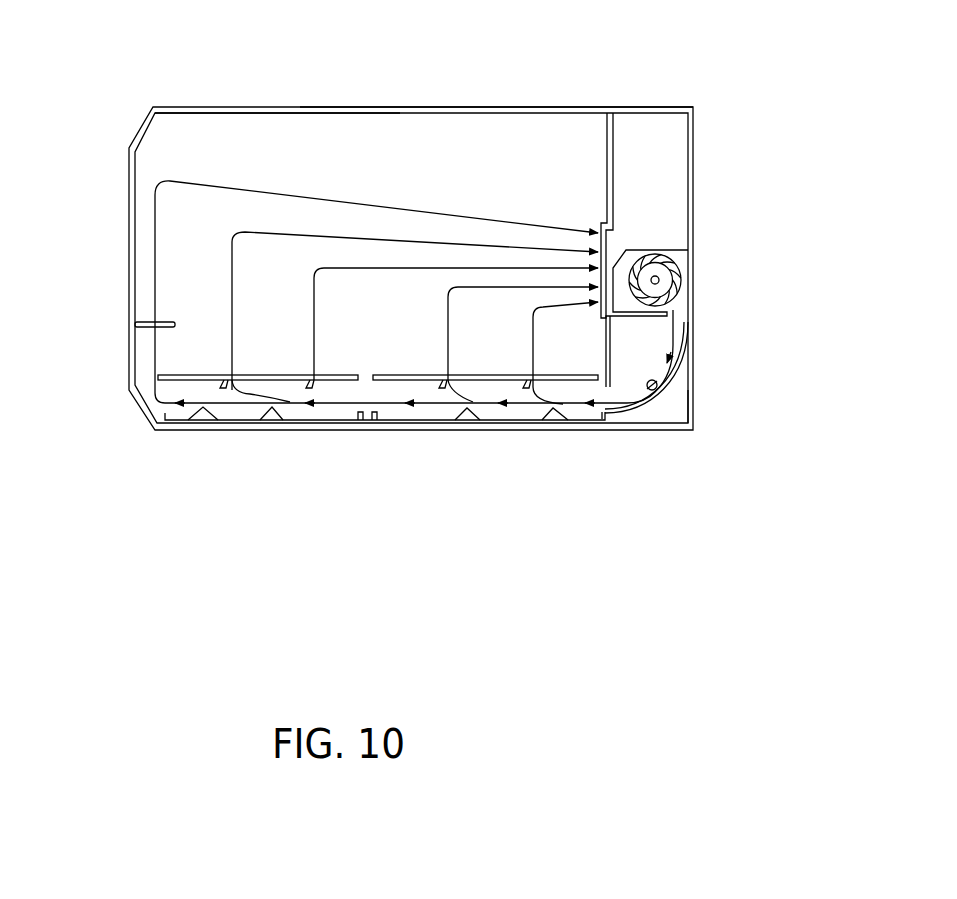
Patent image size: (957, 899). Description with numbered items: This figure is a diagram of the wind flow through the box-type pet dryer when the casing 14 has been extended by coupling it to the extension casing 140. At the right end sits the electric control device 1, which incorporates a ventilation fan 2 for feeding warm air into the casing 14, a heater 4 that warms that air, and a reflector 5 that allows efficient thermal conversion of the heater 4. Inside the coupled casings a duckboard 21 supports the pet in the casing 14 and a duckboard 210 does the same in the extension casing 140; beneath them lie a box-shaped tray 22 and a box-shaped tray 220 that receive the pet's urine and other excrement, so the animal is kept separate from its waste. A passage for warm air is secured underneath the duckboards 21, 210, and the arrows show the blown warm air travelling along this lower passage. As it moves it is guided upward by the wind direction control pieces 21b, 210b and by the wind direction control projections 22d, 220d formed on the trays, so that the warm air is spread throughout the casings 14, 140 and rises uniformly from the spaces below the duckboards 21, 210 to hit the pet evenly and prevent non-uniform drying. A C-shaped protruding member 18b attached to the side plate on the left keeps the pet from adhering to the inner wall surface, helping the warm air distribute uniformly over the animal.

The electric control device 1 is at (693, 187).
The casing 14 is at (465, 107).
The extension casing 140 is at (242, 107).
The ventilation fan 2 is at (680, 277).
The heater 4 is at (657, 384).
The reflector 5 is at (660, 398).
The protruding member 18b is at (150, 325).
The duckboard 21 is at (400, 380).
The wind direction control piece 21b is at (530, 388).
The tray 22 is at (407, 420).
The wind direction control projection 22d is at (557, 420).
The duckboard 210 is at (178, 383).
The wind direction control piece 210b is at (222, 388).
The tray 220 is at (237, 421).
The wind direction control projection 220d is at (282, 418).